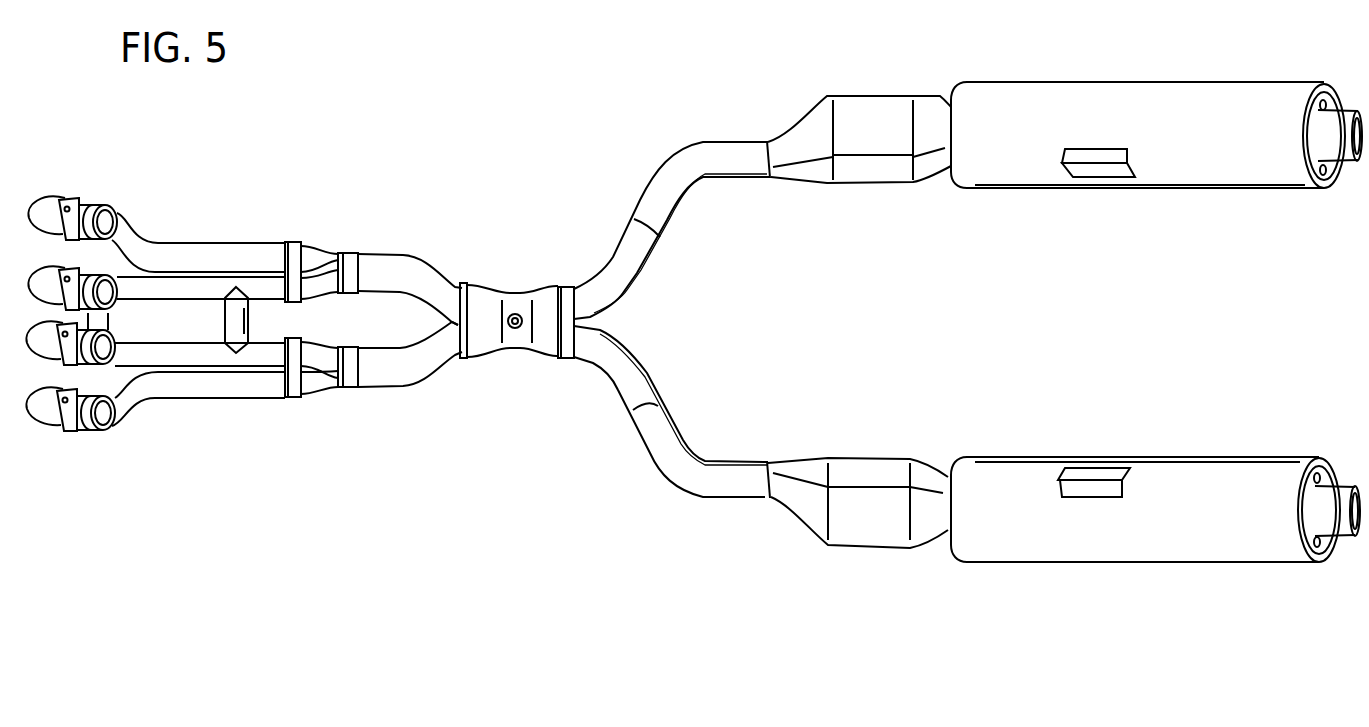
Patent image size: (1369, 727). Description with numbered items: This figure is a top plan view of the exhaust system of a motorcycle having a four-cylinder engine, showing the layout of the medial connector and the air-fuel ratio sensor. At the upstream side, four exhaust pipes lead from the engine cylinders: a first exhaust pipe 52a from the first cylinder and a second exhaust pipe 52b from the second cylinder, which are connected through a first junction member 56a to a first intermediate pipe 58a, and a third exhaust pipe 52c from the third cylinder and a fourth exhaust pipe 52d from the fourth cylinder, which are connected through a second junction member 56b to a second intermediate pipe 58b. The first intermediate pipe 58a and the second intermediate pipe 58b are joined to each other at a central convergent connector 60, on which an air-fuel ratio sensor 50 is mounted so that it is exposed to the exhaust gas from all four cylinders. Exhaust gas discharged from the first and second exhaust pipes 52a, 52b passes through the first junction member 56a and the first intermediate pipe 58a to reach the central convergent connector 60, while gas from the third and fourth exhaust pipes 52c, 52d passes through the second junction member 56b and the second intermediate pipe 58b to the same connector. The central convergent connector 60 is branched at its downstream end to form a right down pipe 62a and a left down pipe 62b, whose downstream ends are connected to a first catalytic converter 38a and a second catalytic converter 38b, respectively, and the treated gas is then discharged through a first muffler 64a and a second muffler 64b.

The air-fuel ratio sensor 50 is at (513, 313).
The central convergent connector 60 is at (513, 330).
The first exhaust pipe 52a is at (212, 262).
The second exhaust pipe 52b is at (137, 280).
The third exhaust pipe 52c is at (137, 358).
The fourth exhaust pipe 52d is at (212, 378).
The first junction member 56a is at (313, 267).
The second junction member 56b is at (313, 373).
The first intermediate pipe 58a is at (418, 277).
The second intermediate pipe 58b is at (418, 363).
The right down pipe 62a is at (625, 255).
The left down pipe 62b is at (620, 387).
The first catalytic converter 38a is at (860, 113).
The second catalytic converter 38b is at (855, 528).
The first muffler 64a is at (1090, 107).
The second muffler 64b is at (1085, 538).